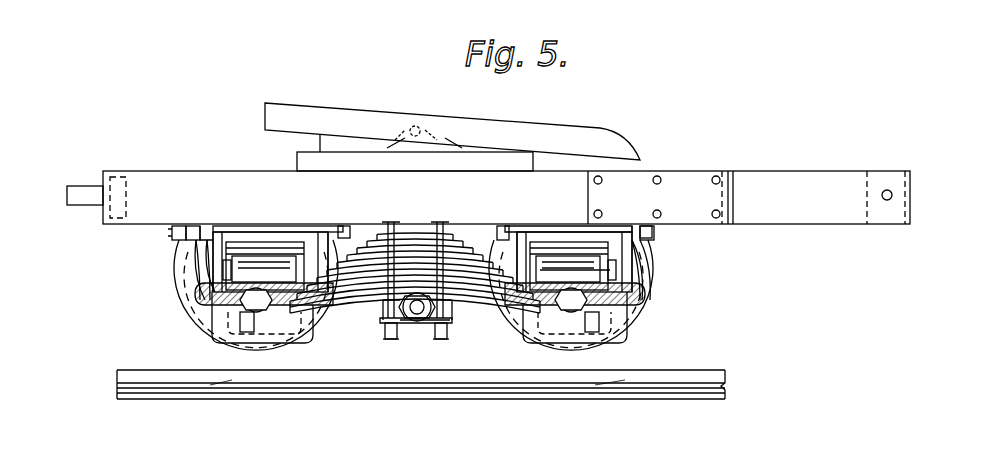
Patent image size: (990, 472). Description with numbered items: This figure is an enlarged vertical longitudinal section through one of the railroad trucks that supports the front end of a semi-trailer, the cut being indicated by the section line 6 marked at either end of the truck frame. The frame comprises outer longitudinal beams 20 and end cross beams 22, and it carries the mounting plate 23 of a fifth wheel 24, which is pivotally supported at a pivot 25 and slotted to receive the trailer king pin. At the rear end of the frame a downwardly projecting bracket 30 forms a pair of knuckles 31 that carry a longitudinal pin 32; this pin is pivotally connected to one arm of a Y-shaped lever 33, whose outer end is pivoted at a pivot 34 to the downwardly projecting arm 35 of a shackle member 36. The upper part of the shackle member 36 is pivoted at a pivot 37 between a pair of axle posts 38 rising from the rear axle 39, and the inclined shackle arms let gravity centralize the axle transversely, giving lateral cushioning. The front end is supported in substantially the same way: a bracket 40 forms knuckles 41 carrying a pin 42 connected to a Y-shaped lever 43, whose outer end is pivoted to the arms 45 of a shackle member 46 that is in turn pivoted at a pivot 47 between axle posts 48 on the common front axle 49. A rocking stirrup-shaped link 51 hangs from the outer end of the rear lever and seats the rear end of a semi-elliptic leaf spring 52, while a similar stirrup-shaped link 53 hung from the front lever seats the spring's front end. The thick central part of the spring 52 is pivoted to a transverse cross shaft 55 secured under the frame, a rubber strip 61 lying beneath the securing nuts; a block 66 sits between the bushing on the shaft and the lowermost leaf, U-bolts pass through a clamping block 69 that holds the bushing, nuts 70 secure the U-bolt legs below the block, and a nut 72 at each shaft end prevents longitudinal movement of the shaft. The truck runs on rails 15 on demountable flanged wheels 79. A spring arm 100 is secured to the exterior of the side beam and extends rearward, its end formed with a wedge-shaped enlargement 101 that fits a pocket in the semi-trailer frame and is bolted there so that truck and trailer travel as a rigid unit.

The section line 6— 6 is at (100, 172).
The rails 15 is at (726, 386).
The outer longitudinal beam 20 is at (135, 170).
The end cross beam 22 is at (108, 193).
The mounting plate 23 is at (488, 160).
The fifth wheel 24 is at (330, 98).
The pivot 25 is at (432, 126).
The downwardly projecting bracket 30 is at (630, 240).
The knuckles 31 is at (502, 228).
The pin 32 is at (650, 228).
The Y-shaped lever 33 is at (630, 276).
The pivot 34 is at (655, 252).
The shackle arm 35 is at (640, 254).
The shackle member 36 is at (555, 240).
The pivot 37 is at (644, 236).
The axle posts 38 is at (636, 265).
The rear axle 39 is at (645, 300).
The downwardly projecting bracket 40 is at (206, 226).
The knuckles 41 is at (180, 240).
The pin 42 is at (345, 226).
The Y-shaped lever 43 is at (266, 258).
The shackle arms 45 is at (238, 236).
The shackle member 46 is at (256, 240).
The pivot 47 is at (312, 256).
The axle posts 48 is at (198, 268).
The front axle 49 is at (240, 310).
The rocking stirrup-shaped link 51 is at (625, 320).
The semi-elliptic leaf spring 52 is at (410, 240).
The rocking stirrup-shaped link 53 is at (215, 333).
The cross shaft 55 is at (390, 310).
The rubber strip 61 is at (390, 226).
The block 66 is at (440, 316).
The clamping block 69 is at (448, 322).
The nuts 70 is at (390, 340).
The nut 72 is at (422, 322).
The demountable flanged wheels 79 is at (196, 358).
The spring arm 100 is at (815, 178).
The wedge-shaped enlargement 101 is at (888, 188).